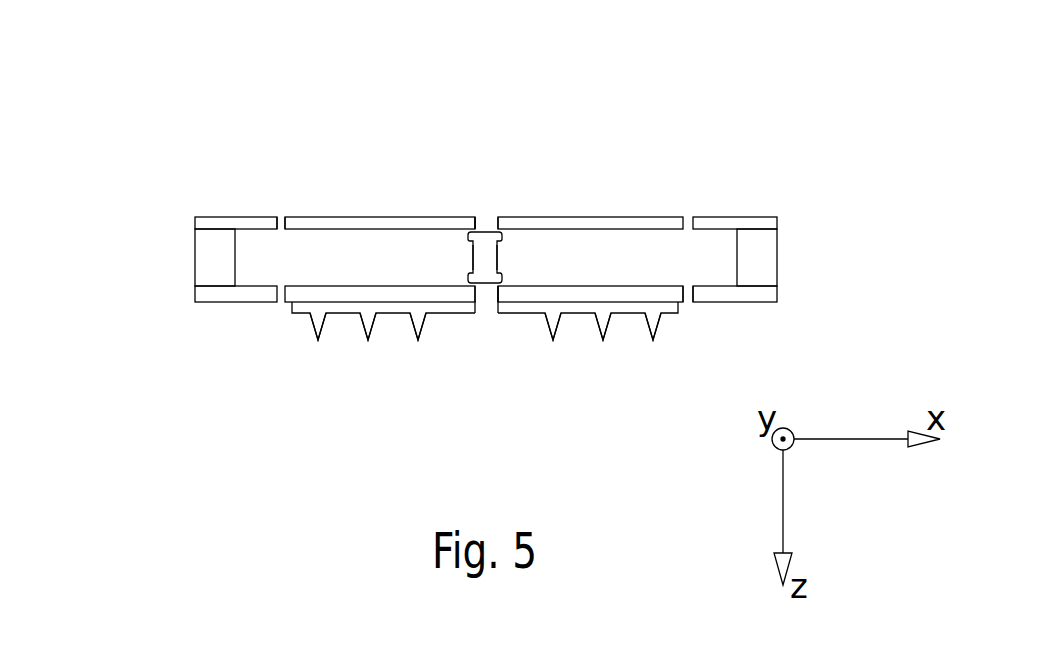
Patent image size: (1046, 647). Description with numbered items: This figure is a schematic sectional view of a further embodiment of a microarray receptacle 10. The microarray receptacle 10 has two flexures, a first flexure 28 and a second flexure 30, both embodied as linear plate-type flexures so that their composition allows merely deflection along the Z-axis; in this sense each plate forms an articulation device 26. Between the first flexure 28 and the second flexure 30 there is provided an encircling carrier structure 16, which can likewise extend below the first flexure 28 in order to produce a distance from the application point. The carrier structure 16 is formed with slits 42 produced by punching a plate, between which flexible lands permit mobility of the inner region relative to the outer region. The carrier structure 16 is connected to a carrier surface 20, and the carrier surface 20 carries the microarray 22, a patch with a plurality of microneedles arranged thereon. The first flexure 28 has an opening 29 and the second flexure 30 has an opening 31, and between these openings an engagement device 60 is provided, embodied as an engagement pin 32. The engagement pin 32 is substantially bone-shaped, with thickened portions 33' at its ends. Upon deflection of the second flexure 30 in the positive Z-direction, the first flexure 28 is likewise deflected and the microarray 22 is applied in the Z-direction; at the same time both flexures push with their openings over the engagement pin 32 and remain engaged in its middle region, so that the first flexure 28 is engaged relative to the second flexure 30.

The microarray receptacle 10 is at (233, 131).
The carrier structure 16 is at (213, 247).
The carrier surface 20 is at (530, 295).
The microarray 22 is at (336, 343).
The articulation device 26 is at (647, 108).
The first flexure 28 is at (223, 302).
The opening 29 is at (482, 313).
The second flexure 30 is at (677, 217).
The opening 31 is at (498, 195).
The engagement pin 32 is at (487, 257).
The thickened portion 33' is at (522, 351).
The slit 42 is at (283, 217).
The engagement device 60 is at (522, 246).